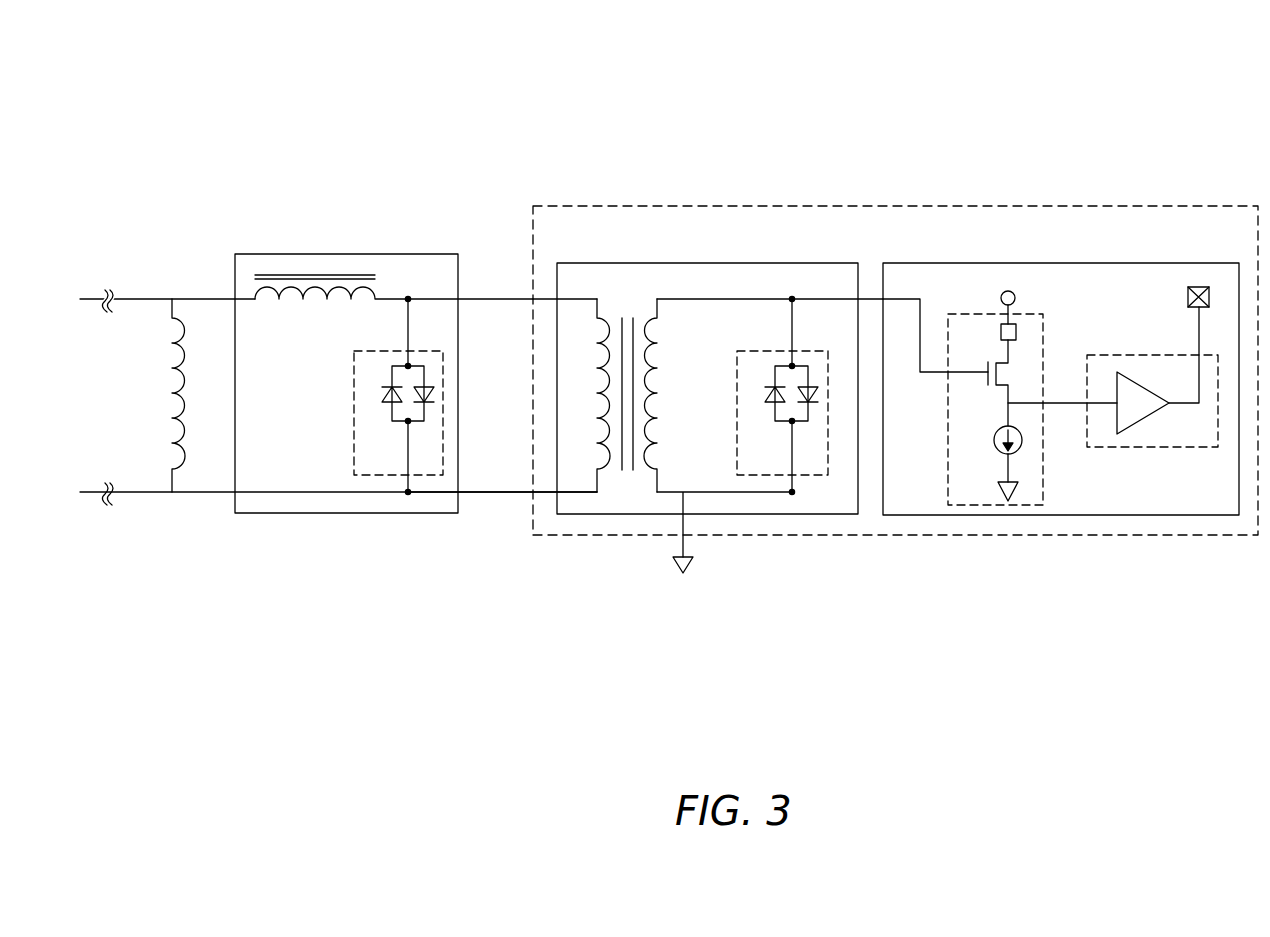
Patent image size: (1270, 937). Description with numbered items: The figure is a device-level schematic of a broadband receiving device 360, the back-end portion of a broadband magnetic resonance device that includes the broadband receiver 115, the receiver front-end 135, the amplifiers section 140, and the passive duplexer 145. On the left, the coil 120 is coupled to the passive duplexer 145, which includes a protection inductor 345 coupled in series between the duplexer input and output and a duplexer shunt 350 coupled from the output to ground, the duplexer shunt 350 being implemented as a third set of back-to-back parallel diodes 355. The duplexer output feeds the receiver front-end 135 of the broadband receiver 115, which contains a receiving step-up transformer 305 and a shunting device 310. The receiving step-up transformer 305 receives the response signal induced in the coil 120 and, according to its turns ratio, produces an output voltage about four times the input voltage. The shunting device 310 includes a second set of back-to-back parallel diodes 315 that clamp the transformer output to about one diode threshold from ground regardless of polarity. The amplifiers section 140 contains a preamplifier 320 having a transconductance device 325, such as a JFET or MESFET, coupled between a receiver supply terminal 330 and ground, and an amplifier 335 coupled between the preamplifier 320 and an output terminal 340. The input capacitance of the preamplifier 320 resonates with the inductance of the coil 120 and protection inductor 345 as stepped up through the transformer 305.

The broadband receiving device 360 is at (196, 46).
The coil 120 is at (177, 318).
The passive duplexer 145 is at (252, 254).
The protection inductor 345 is at (297, 303).
The duplexer shunt 350 is at (354, 385).
The third set of back-to-back parallel diodes 355 is at (396, 422).
The broadband receiver 115 is at (862, 207).
The receiver front-end 135 is at (687, 263).
The receiving step-up transformer 305 is at (666, 343).
The shunting device 310 is at (737, 379).
The second set of back-to-back parallel diodes 315 is at (780, 422).
The amplifiers section 140 is at (1072, 263).
The preamplifier 320 is at (948, 428).
The transconductance device 325 is at (1000, 388).
The receiver supply terminal 330 is at (1015, 298).
The amplifier 335 is at (1127, 355).
The output terminal 340 is at (1188, 296).